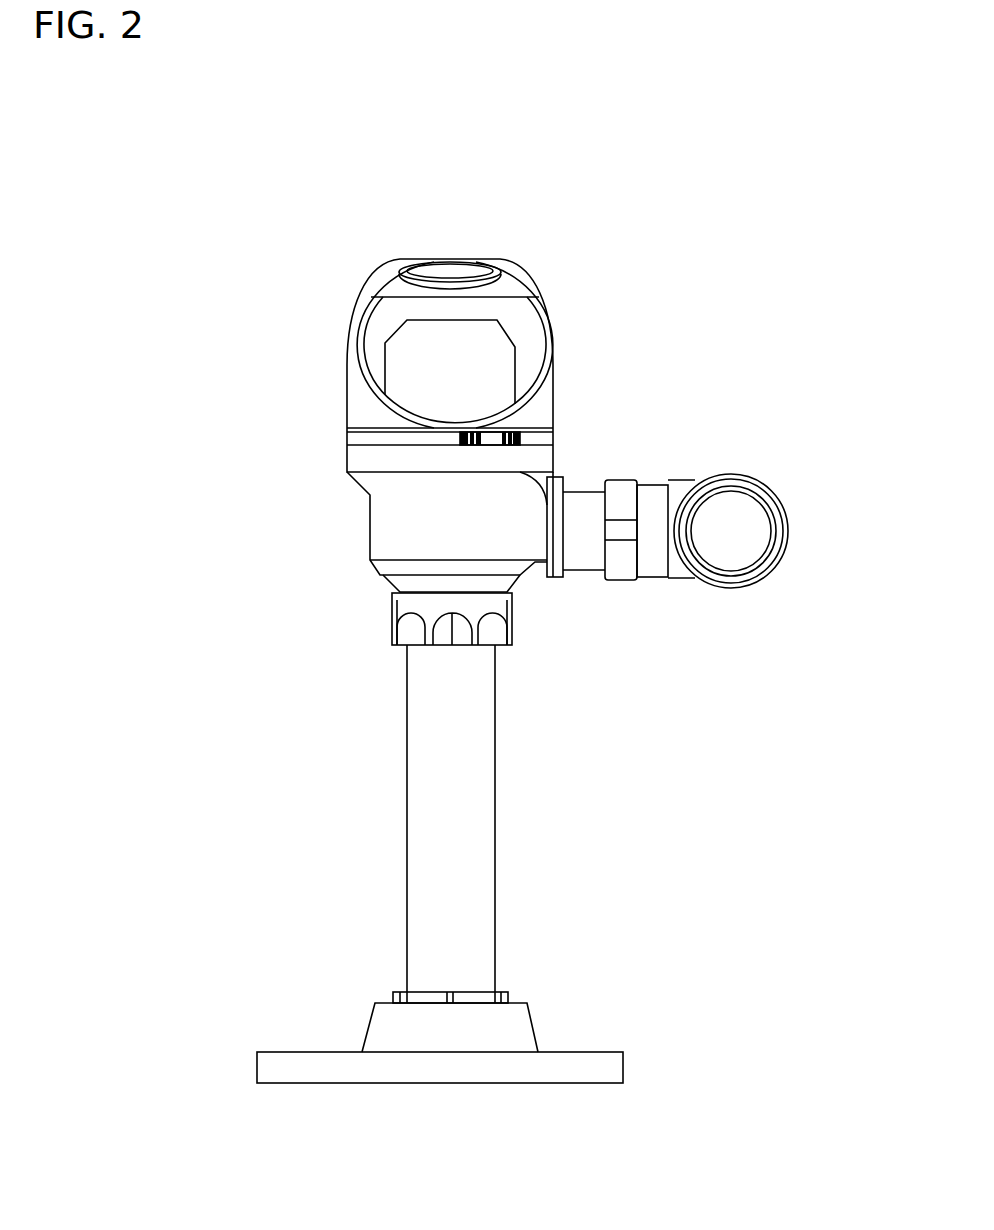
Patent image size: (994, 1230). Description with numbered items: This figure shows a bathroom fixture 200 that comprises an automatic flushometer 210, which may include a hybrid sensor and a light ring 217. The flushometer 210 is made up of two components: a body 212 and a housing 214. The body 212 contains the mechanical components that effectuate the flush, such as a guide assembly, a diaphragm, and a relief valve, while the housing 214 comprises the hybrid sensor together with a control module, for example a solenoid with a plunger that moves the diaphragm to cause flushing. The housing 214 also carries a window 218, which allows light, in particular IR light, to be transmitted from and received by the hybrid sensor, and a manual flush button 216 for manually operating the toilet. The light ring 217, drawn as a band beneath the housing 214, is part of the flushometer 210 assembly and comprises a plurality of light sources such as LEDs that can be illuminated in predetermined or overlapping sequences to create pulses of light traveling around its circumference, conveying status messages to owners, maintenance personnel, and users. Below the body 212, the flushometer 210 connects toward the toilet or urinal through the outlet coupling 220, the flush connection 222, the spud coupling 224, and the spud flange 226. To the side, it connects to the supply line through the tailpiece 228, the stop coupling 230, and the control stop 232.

The bathroom fixture 200 is at (208, 202).
The automatic flushometer 210 is at (355, 266).
The body 212 is at (542, 570).
The housing 214 is at (555, 412).
The manual flush button 216 is at (487, 267).
The light ring 217 is at (555, 437).
The window 218 is at (512, 357).
The outlet coupling 220 is at (393, 620).
The flush connection 222 is at (407, 802).
The spud coupling 224 is at (393, 994).
The spud flange 226 is at (530, 1026).
The tailpiece 228 is at (585, 572).
The stop coupling 230 is at (632, 480).
The control stop 232 is at (792, 533).